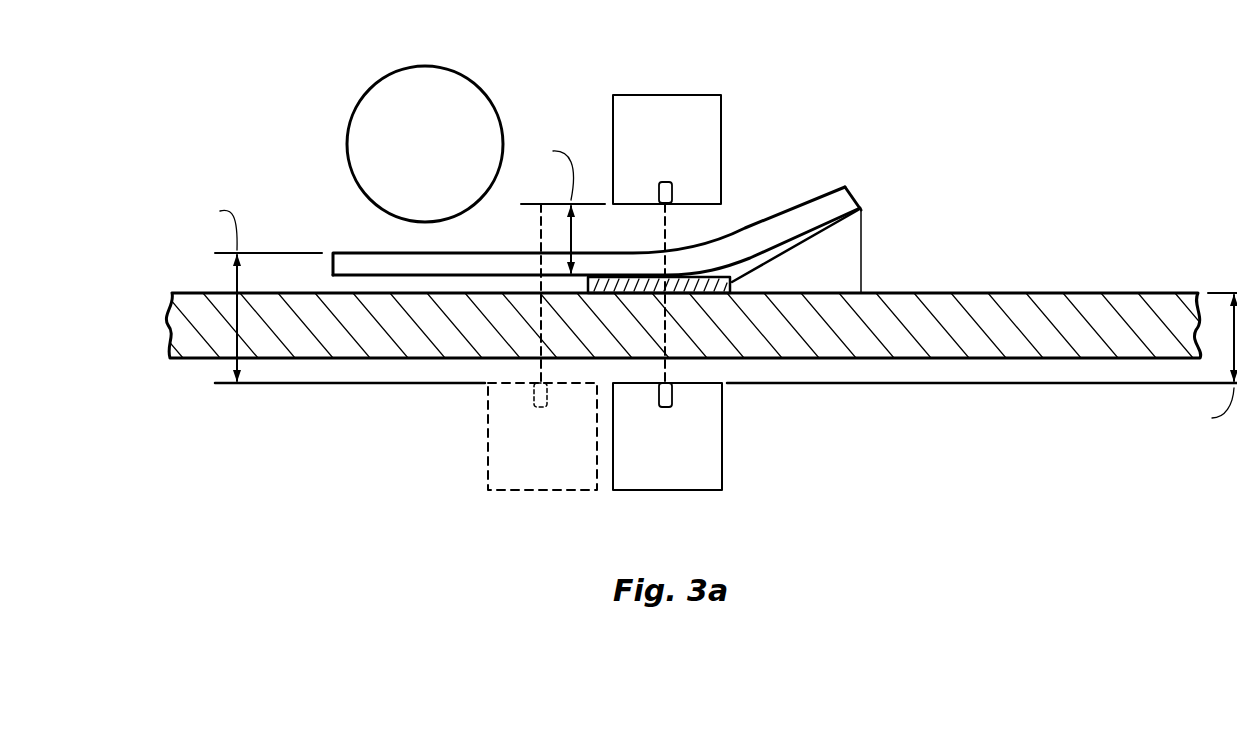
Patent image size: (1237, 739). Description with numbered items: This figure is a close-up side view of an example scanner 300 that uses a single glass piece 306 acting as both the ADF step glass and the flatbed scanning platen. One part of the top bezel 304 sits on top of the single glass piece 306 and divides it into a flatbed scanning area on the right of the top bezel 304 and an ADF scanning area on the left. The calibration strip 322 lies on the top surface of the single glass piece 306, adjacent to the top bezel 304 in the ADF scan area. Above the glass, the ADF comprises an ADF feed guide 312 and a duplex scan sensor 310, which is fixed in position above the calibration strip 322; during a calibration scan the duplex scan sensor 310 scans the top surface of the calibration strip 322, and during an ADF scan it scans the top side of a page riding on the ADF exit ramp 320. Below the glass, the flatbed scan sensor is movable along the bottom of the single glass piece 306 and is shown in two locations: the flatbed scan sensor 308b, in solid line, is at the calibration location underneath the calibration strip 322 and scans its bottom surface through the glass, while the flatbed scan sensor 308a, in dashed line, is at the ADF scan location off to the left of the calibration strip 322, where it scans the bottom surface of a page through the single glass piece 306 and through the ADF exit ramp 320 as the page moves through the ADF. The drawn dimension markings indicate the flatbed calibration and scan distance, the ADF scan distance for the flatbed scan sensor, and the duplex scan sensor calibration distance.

The scanner 300 is at (341, 43).
The top bezel 304 is at (843, 239).
The single glass piece 306 is at (1092, 307).
The flatbed scan sensor 308a is at (542, 436).
The flatbed scan sensor 308b is at (667, 436).
The duplex scan sensor 310 is at (667, 149).
The ADF feed guide 312 is at (425, 144).
The ADF exit ramp 320 is at (367, 249).
The calibration strip 322 is at (626, 298).